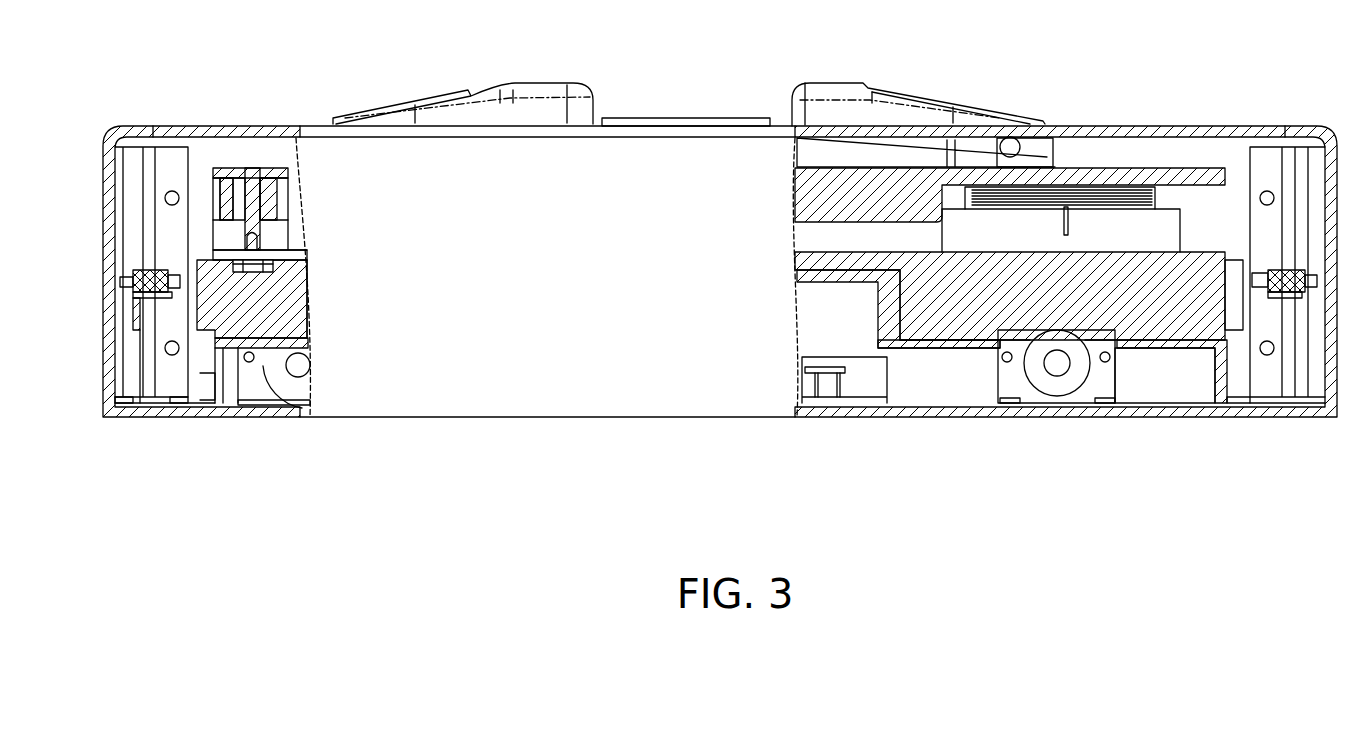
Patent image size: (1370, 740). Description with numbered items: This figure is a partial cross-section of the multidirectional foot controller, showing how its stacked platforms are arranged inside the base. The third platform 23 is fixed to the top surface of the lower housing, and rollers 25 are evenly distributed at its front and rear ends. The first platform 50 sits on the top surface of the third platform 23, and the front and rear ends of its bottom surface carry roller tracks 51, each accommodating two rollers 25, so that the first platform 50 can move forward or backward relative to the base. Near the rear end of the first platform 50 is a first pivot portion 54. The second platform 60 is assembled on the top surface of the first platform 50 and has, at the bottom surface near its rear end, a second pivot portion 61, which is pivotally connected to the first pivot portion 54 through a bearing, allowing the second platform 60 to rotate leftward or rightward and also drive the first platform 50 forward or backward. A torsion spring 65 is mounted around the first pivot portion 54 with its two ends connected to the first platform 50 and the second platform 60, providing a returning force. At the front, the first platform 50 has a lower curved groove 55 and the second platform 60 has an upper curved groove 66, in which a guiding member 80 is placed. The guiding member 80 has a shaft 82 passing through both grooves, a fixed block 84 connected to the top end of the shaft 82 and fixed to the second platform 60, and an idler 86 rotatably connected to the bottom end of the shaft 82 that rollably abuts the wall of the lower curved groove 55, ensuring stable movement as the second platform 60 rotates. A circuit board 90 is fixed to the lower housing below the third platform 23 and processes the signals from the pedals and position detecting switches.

The guiding member 80 is at (261, 151).
The fixed block 84 is at (272, 172).
The shaft 82 is at (268, 213).
The upper curved groove 66 is at (264, 292).
The idler 86 is at (305, 290).
The lower curved groove 55 is at (395, 300).
The torsion spring 65 is at (1060, 190).
The second pivot portion 61 is at (1060, 140).
The second platform 60 is at (1168, 165).
The first pivot portion 54 is at (1222, 245).
The first platform 50 is at (1163, 237).
The circuit board 90 is at (848, 370).
The roller track 51 is at (1017, 331).
The roller 25 is at (1057, 387).
The third platform 23 is at (1236, 358).